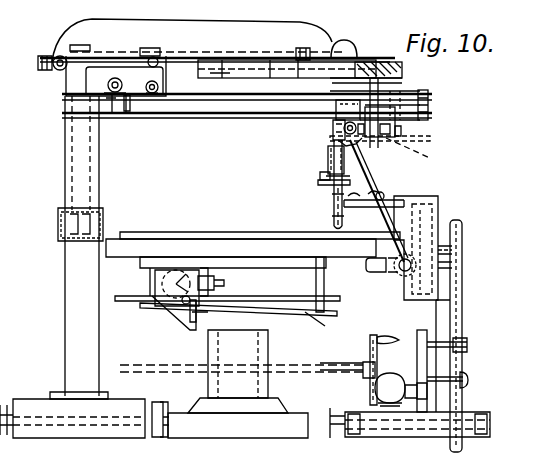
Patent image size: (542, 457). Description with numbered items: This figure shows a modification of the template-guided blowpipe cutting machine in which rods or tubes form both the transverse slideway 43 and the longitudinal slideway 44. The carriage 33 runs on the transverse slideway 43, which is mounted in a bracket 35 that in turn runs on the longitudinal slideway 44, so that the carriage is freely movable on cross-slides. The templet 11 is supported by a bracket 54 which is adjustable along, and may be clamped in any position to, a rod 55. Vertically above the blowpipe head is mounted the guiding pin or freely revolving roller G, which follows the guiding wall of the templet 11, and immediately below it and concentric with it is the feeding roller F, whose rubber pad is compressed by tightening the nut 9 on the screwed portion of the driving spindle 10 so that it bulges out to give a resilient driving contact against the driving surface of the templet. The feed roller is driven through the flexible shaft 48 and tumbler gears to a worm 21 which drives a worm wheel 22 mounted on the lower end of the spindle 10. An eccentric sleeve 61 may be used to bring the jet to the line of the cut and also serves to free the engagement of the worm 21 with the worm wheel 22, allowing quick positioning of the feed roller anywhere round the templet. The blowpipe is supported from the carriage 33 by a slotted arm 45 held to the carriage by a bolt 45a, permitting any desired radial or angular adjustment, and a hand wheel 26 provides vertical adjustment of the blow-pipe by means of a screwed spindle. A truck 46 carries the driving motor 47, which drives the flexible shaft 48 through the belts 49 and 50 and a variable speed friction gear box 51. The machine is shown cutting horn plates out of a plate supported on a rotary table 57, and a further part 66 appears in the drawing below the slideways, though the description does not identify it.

The nut 9 is at (428, 95).
The driving spindle 10 is at (430, 113).
The templet 11 is at (305, 96).
The worm 21 is at (336, 124).
The worm wheel 22 is at (421, 157).
The hand wheel 26 is at (320, 192).
The carriage 33 is at (395, 135).
The bracket 35 is at (119, 120).
The transverse slideway 43 is at (232, 102).
The longitudinal slideway 44 is at (140, 105).
The slotted arm 45 is at (356, 148).
The bolt 45a is at (328, 156).
The truck 46 is at (392, 430).
The driving motor 47 is at (388, 375).
The flexible shaft 48 is at (392, 178).
The belt 49 is at (427, 381).
The belt 50 is at (462, 302).
The variable speed friction gear box 51 is at (438, 214).
The bracket 54 is at (225, 42).
The rod 55 is at (50, 70).
The rotary table 57 is at (272, 320).
The eccentric sleeve 61 is at (382, 126).
The table 66 is at (210, 234).
The guiding pin or freely revolving roller G is at (372, 70).
The feeding roller F is at (404, 73).